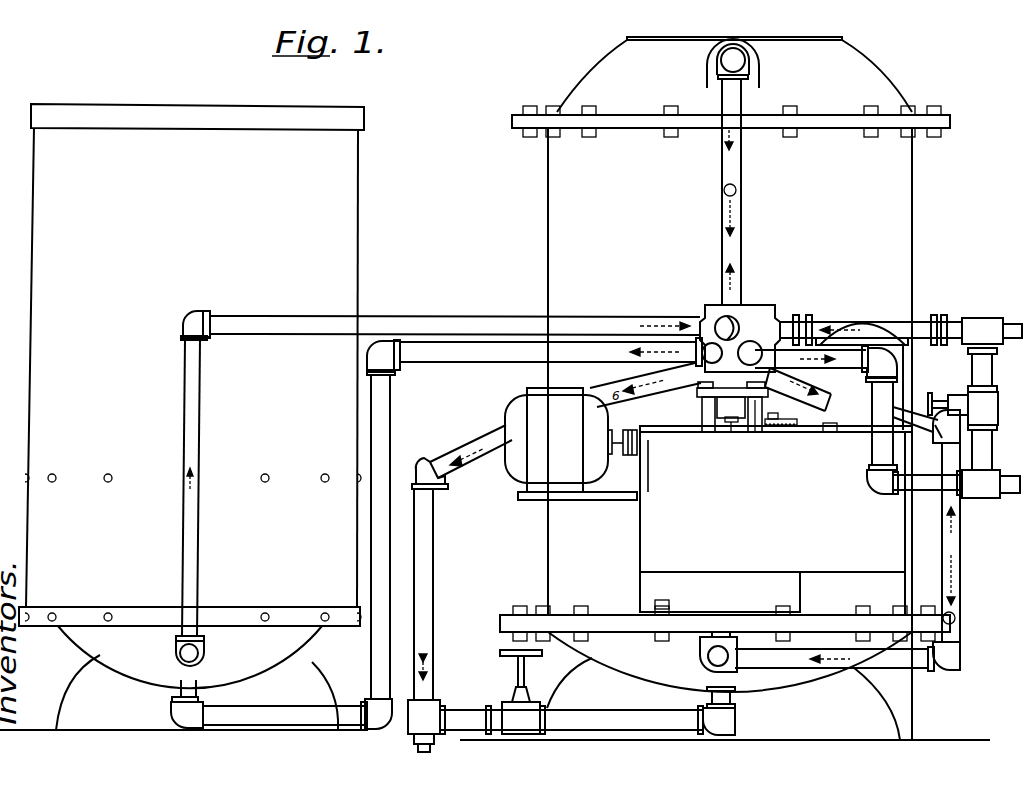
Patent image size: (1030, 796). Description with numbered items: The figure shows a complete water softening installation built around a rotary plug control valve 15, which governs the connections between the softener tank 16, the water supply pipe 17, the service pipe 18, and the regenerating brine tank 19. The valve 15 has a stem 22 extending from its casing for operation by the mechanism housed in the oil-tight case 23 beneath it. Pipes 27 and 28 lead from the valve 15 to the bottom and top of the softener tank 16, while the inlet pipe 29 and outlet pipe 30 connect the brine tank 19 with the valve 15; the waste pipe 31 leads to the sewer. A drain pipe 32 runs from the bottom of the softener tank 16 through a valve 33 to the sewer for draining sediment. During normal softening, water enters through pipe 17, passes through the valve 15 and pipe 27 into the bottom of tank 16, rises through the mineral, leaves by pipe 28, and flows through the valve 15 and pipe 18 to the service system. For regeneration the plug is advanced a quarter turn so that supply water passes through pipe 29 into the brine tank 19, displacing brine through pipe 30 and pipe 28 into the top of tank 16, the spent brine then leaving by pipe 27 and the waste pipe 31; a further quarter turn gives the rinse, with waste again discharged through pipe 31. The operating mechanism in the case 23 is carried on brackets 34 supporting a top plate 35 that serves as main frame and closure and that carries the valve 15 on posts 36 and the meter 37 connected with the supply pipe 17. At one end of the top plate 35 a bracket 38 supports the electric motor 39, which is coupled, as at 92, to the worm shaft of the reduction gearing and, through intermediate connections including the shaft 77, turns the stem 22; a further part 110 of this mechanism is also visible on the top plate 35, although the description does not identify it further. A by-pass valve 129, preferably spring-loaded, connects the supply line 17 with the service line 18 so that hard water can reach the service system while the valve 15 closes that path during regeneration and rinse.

The valve 15 is at (705, 306).
The softener tank 16 is at (900, 204).
The pipe 17 is at (1006, 320).
The pipe 18 is at (855, 362).
The regenerating brine tank 19 is at (345, 300).
The stem 22 is at (718, 415).
The oil-tight case 23 is at (645, 525).
The pipe 27 is at (820, 400).
The pipe 28 is at (738, 208).
The inlet pipe 29 is at (392, 426).
The outlet pipe 30 is at (281, 326).
The waste pipe 31 is at (604, 389).
The drain pipe 32 is at (598, 714).
The valve 33 is at (528, 690).
The brackets 34 is at (638, 583).
The top plate 35 is at (805, 433).
The posts 36 is at (754, 434).
The meter 37 is at (880, 330).
The bracket 38 is at (592, 500).
The electric motor 39 is at (548, 398).
The shaft 77 is at (726, 425).
The coupling 92 is at (624, 456).
The cam 110 is at (782, 428).
The valve 129 is at (985, 415).